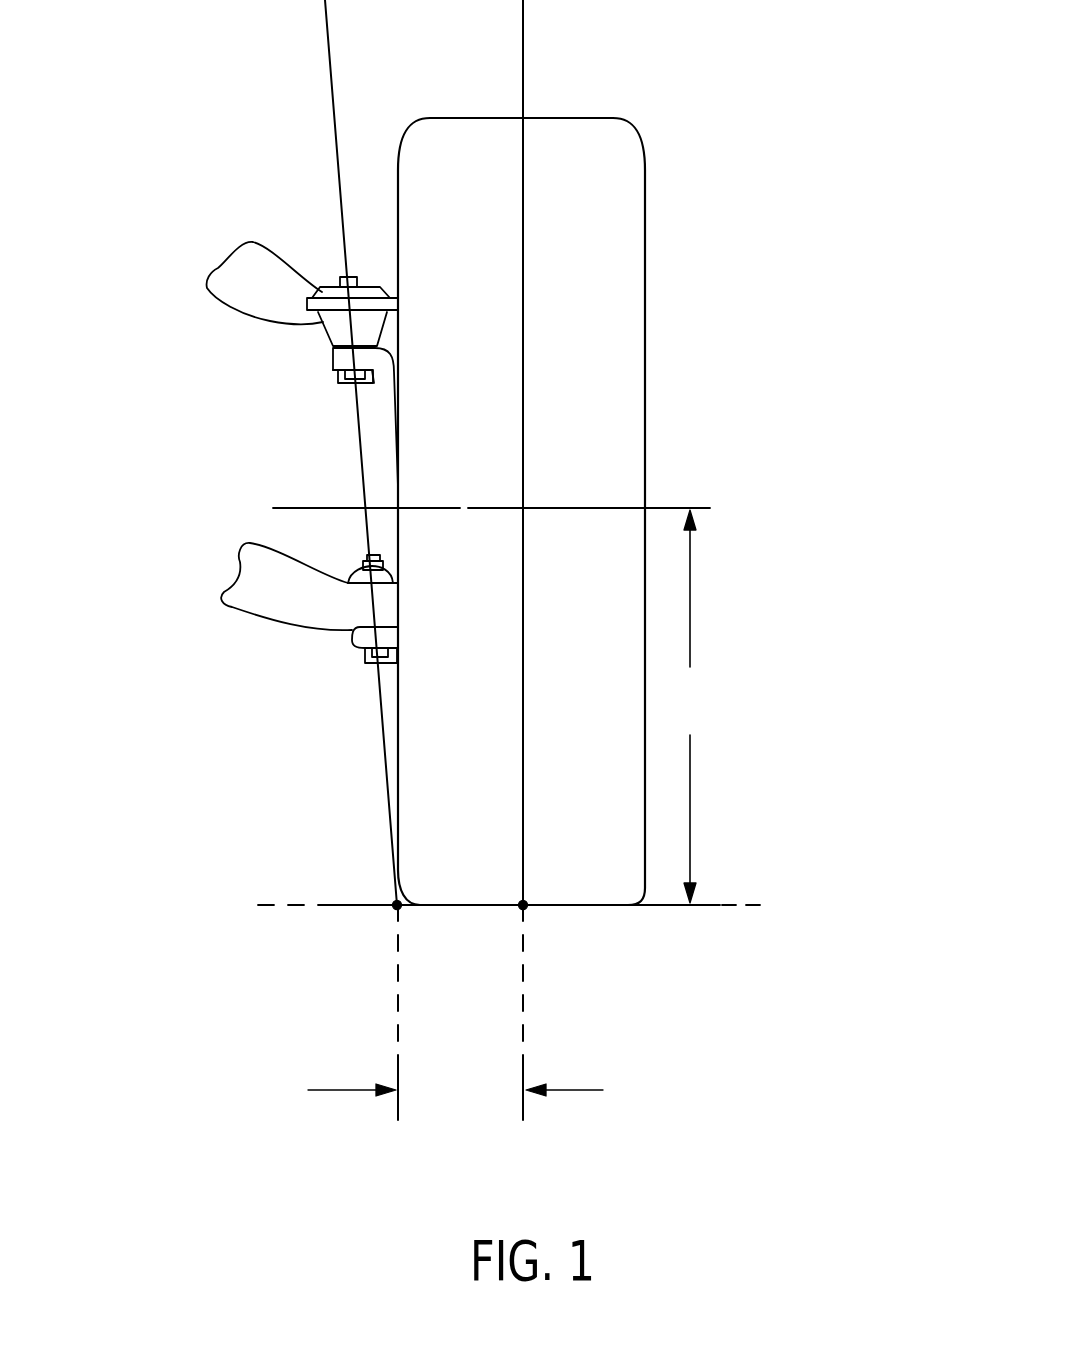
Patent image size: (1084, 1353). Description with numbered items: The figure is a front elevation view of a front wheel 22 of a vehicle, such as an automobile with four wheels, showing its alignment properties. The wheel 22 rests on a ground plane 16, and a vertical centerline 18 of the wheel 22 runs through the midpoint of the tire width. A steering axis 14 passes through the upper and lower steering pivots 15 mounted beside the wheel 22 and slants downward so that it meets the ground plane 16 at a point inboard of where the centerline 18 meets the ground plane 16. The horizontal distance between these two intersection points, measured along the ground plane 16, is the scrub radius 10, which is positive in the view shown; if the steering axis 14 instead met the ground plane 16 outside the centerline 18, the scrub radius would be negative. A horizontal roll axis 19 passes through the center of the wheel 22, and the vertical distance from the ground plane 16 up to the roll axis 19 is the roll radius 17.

The scrub radius 10 is at (613, 1033).
The steering axis 14 is at (320, 113).
The steering pivot 15 is at (312, 344).
The ground plane 16 is at (606, 914).
The roll radius 17 is at (732, 638).
The centerline 18 is at (540, 70).
The roll axis 19 is at (673, 508).
The wheel 22 is at (662, 260).